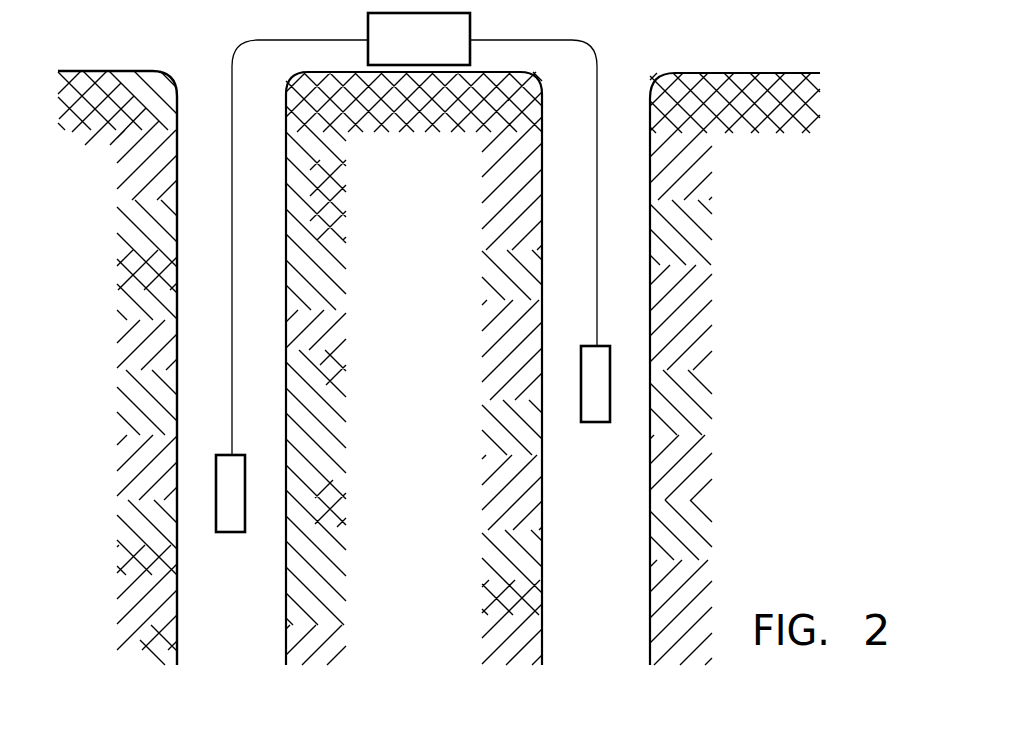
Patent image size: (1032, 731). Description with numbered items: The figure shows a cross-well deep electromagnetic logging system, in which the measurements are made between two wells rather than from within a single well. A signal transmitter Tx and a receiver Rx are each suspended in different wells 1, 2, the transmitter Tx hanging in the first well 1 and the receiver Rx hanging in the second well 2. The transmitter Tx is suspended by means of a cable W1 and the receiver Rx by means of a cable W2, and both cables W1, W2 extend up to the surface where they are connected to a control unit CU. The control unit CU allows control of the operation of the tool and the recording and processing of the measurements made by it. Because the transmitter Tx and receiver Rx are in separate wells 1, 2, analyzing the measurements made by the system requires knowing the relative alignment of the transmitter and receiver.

The well 1 is at (233, 641).
The well 2 is at (599, 641).
The control unit CU is at (419, 39).
The cable W1 is at (232, 349).
The cable W2 is at (597, 293).
The transmitter Tx is at (246, 488).
The receiver Rx is at (612, 410).